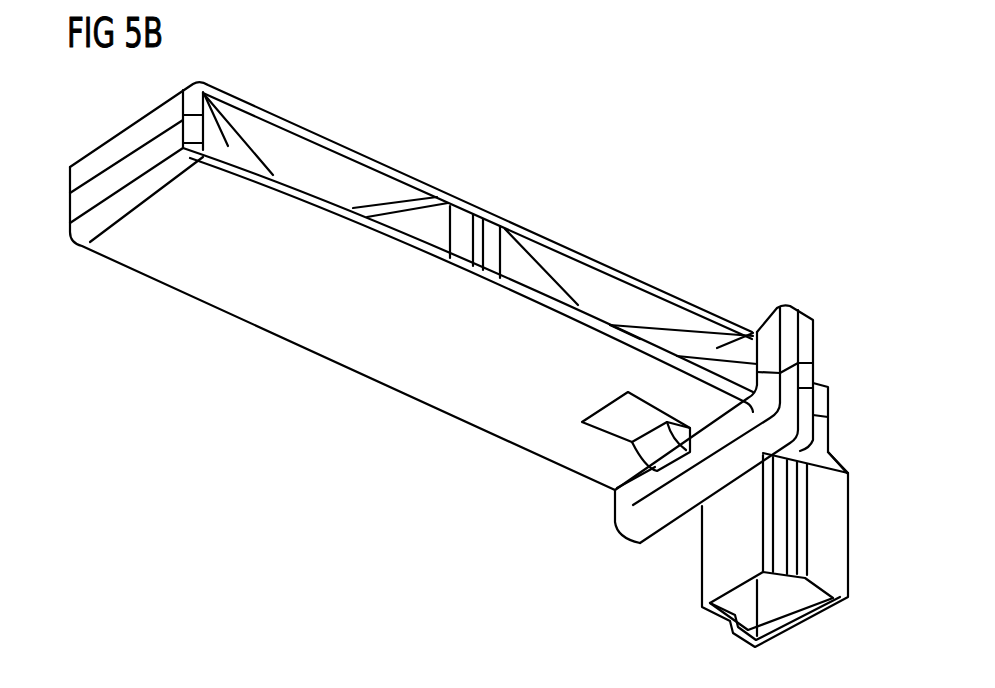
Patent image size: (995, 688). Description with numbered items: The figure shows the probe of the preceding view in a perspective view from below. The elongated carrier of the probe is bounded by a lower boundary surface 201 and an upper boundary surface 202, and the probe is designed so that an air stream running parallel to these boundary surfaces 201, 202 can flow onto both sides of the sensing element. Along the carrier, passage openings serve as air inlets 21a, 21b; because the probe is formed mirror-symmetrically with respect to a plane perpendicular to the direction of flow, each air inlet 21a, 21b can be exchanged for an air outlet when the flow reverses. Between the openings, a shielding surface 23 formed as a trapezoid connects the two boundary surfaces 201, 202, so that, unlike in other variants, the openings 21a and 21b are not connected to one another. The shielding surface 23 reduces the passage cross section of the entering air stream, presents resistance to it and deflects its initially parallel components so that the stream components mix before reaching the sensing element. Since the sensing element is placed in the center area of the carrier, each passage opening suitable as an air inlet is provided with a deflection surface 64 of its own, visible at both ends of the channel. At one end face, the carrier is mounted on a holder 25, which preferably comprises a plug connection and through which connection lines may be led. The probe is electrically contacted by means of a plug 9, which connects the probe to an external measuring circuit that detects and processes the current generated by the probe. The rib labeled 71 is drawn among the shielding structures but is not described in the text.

The lower boundary surface 201 is at (330, 350).
The deflection surface 64 is at (220, 128).
The air inlet 21a is at (335, 178).
The air inlet 21b is at (612, 304).
The shielding surface 23 is at (438, 215).
The rib / web 71 is at (507, 233).
The boundary surface 202 is at (553, 240).
The holder 25 is at (763, 338).
The plug 9 is at (712, 560).